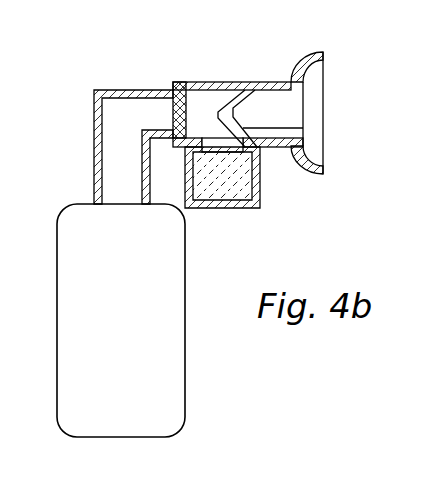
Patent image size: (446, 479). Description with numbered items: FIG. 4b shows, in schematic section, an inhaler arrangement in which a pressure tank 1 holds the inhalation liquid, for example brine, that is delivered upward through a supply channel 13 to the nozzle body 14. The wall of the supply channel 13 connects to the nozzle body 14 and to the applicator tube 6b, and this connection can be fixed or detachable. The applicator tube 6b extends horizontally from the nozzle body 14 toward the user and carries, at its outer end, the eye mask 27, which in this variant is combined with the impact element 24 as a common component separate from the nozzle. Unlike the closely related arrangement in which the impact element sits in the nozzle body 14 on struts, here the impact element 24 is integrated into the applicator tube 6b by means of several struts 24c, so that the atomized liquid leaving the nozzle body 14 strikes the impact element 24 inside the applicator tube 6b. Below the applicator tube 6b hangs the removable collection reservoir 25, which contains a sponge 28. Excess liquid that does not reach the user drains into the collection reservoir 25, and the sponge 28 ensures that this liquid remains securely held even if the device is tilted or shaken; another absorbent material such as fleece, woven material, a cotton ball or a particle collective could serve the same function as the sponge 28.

The pressure tank 1 is at (120, 298).
The applicator tube 6b is at (208, 98).
The supply channel 13 is at (140, 129).
The nozzle body 14 is at (171, 96).
The impact element 24 is at (233, 111).
The struts 24c is at (303, 128).
The collection reservoir 25 is at (258, 185).
The eye mask 27 is at (315, 110).
The sponge 28 is at (220, 187).